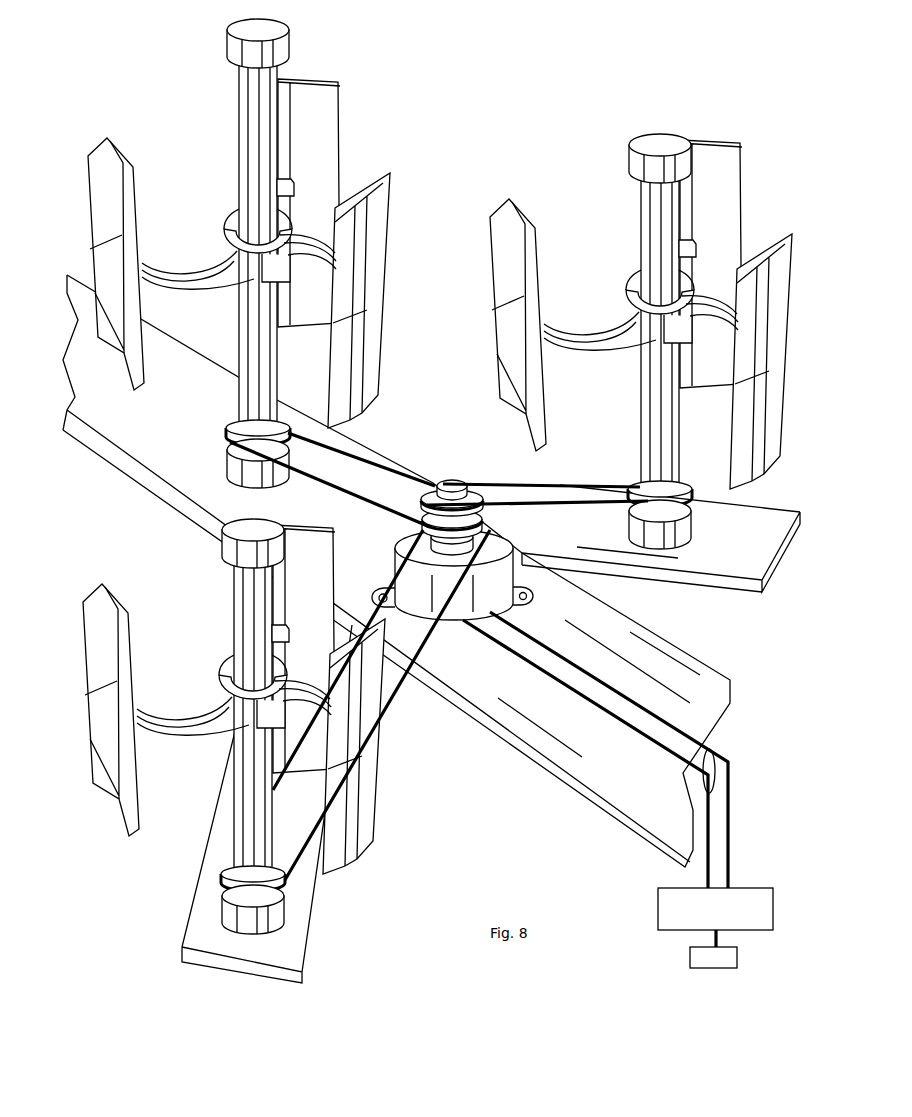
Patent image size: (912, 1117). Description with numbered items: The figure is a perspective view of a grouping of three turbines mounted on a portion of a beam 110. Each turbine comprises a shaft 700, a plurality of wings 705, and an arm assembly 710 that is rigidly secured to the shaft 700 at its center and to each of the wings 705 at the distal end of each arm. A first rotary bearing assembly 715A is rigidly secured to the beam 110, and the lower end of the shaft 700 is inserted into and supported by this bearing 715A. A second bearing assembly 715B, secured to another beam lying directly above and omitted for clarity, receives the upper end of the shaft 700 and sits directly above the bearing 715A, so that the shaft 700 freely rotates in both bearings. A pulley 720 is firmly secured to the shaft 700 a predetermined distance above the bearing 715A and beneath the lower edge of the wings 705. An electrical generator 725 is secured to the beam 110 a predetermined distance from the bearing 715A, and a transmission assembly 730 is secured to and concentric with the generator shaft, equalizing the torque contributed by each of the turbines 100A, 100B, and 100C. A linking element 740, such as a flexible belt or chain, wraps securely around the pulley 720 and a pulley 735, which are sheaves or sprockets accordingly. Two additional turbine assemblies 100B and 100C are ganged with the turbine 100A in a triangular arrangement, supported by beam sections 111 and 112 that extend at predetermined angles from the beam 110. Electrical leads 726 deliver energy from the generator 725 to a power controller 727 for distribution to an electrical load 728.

The turbine 100A is at (259, 253).
The turbine assembly 100B is at (592, 167).
The turbine assembly 100C is at (405, 809).
The beam 110 is at (548, 775).
The beam section 111 is at (722, 592).
The beam section 112 is at (305, 945).
The shaft 700 is at (238, 323).
The wings 705 is at (338, 97).
The arm assembly 710 is at (223, 235).
The first rotary bearing assembly 715A is at (226, 458).
The second bearing assembly 715B is at (291, 47).
The pulley 720 is at (226, 423).
The electrical generator 725 is at (455, 622).
The transmission assembly 730 is at (451, 478).
The pulley 735 is at (486, 518).
The linking element 740 is at (334, 488).
The electrical leads 726 is at (716, 759).
The power controller 727 is at (658, 910).
The electrical load 728 is at (690, 957).